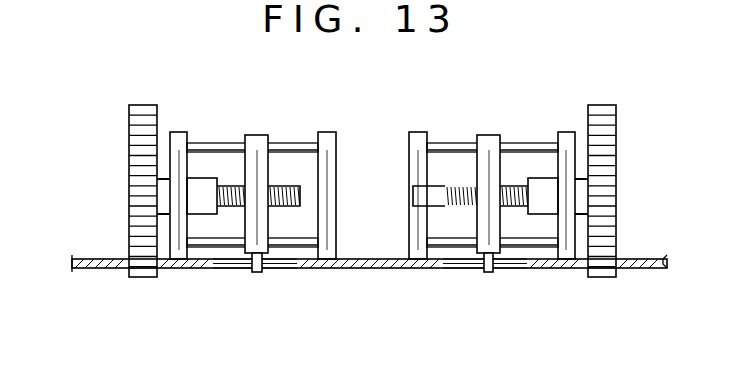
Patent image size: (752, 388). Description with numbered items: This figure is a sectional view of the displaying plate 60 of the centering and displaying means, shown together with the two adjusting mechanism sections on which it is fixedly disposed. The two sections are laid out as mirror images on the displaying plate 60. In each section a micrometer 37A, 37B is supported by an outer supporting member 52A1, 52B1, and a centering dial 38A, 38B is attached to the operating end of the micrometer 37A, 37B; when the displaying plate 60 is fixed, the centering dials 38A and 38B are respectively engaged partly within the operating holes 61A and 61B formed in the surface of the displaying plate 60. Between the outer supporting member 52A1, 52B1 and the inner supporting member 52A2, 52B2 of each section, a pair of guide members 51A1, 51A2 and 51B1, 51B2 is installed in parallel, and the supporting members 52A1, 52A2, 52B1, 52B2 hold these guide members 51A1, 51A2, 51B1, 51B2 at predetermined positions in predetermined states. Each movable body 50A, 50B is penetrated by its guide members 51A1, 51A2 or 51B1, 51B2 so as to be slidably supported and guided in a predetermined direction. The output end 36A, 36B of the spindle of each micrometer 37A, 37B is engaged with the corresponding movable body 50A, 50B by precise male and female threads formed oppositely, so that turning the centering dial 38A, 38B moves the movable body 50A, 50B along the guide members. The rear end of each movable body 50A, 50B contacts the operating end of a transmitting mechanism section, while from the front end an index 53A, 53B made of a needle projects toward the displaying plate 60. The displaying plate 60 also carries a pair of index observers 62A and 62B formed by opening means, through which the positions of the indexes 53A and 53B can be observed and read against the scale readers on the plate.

The displaying plate 60 is at (92, 272).
The operating hole 61A is at (605, 278).
The operating hole 61B is at (140, 278).
The index observer 62A is at (517, 268).
The index observer 62B is at (225, 268).
The index 53A is at (488, 273).
The index 53B is at (257, 273).
The movable body 50A is at (492, 145).
The movable body 50B is at (257, 145).
The guide member 51A1 is at (460, 248).
The guide member 51A2 is at (443, 143).
The guide member 51B1 is at (305, 248).
The guide member 51B2 is at (207, 148).
The supporting member 52A1 is at (565, 135).
The supporting member 52A2 is at (418, 183).
The supporting member 52B1 is at (180, 133).
The supporting member 52B2 is at (337, 135).
The output end 36A is at (462, 185).
The output end 36B is at (283, 183).
The micrometer 37A is at (540, 185).
The micrometer 37B is at (205, 187).
The centering dial 38A is at (607, 135).
The centering dial 38B is at (129, 140).